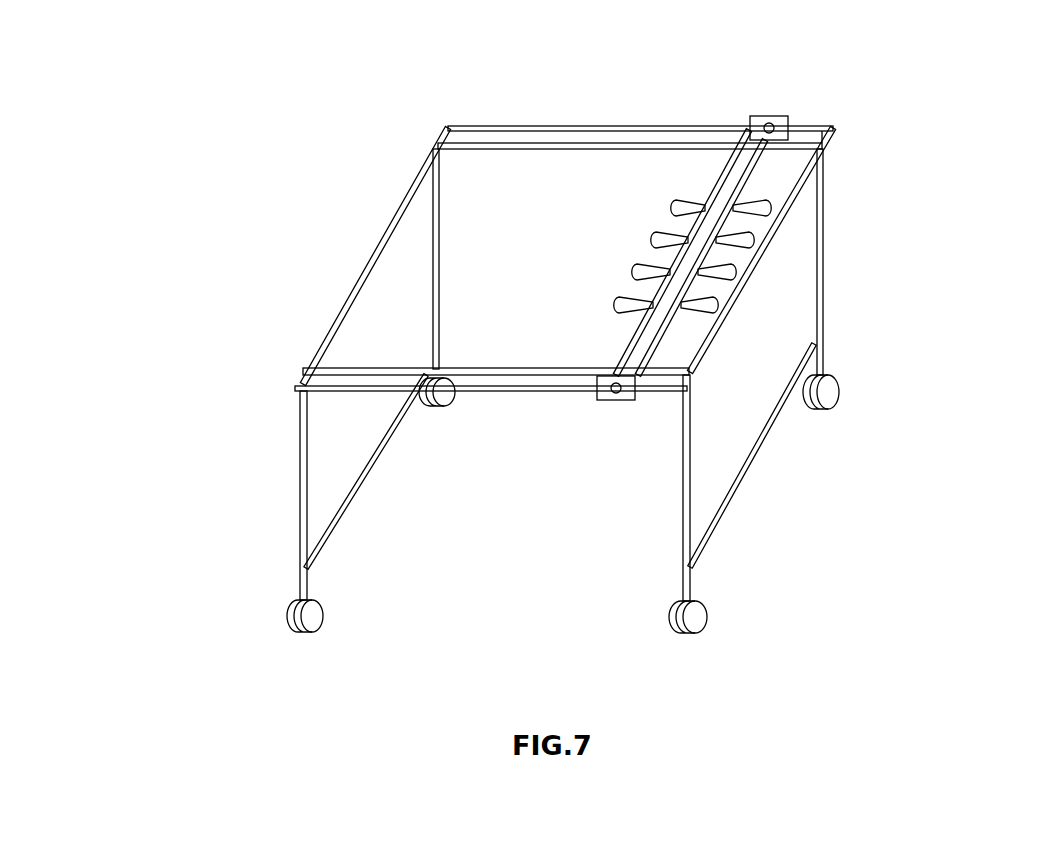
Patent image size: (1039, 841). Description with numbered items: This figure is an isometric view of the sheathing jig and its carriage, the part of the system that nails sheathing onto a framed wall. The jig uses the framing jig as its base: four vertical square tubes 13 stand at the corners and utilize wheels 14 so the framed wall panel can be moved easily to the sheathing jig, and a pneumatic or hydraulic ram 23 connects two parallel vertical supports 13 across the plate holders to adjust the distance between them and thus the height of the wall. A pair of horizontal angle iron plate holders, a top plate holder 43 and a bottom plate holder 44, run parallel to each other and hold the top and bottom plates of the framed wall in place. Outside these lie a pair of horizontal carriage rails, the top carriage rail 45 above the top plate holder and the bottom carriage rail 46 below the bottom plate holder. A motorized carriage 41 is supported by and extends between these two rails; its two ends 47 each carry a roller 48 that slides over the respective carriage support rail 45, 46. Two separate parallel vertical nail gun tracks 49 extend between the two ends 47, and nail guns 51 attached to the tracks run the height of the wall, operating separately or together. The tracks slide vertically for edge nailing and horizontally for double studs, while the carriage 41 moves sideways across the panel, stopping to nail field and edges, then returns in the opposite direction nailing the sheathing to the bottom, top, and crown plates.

The vertical square tube 13 is at (822, 313).
The wheel 14 is at (828, 392).
The pneumatic or hydraulic ram 23 is at (750, 465).
The motorized carriage 41 is at (790, 120).
The top plate holder 43 is at (438, 147).
The bottom plate holder 44 is at (303, 368).
The top carriage rail 45 is at (448, 127).
The bottom carriage rail 46 is at (296, 388).
The carriage end 47 is at (747, 125).
The roller 48 is at (770, 115).
The nail gun track 49 is at (685, 205).
The nail gun 51 is at (665, 245).